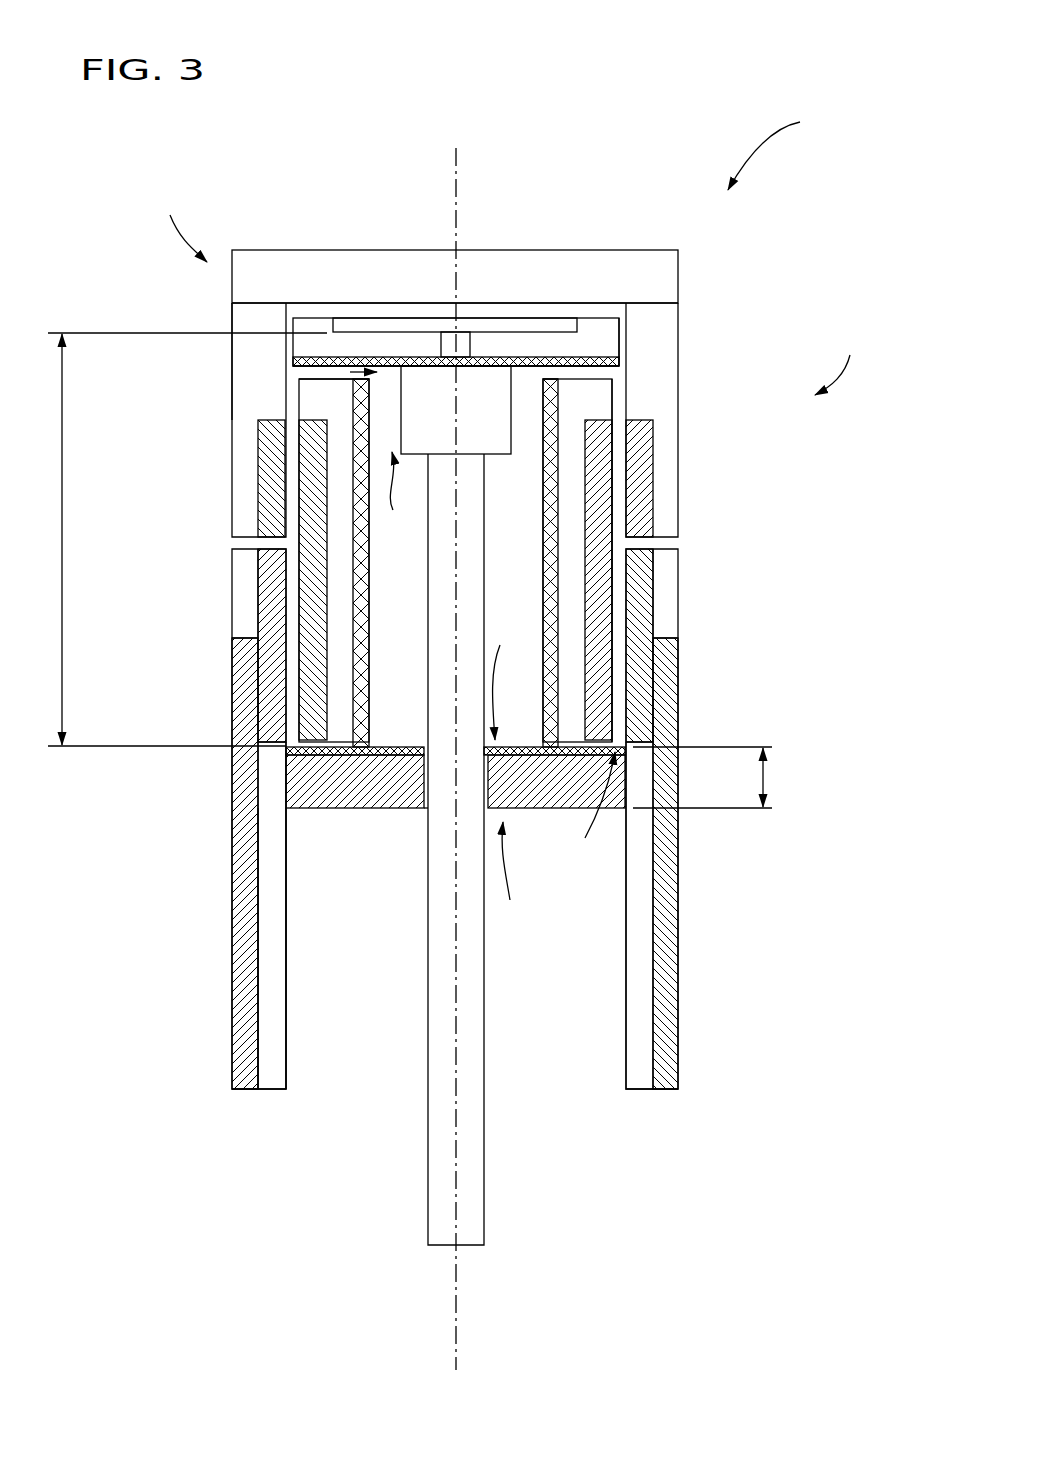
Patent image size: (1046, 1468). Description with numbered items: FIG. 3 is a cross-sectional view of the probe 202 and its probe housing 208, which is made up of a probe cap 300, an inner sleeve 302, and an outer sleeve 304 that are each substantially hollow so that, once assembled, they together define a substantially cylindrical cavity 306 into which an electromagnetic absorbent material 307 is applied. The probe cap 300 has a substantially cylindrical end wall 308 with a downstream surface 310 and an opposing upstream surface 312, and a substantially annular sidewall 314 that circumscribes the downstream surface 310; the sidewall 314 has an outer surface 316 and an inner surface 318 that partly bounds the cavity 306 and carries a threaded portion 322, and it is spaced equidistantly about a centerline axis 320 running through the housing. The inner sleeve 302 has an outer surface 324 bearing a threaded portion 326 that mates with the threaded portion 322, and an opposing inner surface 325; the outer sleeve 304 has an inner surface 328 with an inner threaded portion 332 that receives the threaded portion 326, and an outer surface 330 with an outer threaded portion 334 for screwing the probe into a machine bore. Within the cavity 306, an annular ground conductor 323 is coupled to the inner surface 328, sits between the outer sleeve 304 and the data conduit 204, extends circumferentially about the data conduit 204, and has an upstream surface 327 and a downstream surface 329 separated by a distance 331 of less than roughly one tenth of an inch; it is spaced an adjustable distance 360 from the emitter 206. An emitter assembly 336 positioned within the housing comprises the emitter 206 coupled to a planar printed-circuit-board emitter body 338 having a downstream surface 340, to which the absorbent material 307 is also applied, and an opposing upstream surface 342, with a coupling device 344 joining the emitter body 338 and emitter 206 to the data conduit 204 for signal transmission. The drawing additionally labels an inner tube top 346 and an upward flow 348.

The probe 202 is at (792, 146).
The data conduit 204 is at (485, 1228).
The emitter 206 is at (397, 318).
The probe housing 208 is at (851, 357).
The probe cap 300 is at (174, 222).
The inner sleeve 302 is at (357, 667).
The outer sleeve 304 is at (287, 980).
The cavity 306 is at (424, 609).
The electromagnetic absorbent material 307 is at (593, 358).
The end wall 308 is at (362, 250).
The downstream surface 310 is at (603, 303).
The upstream surface 312 is at (518, 250).
The sidewall 314 is at (232, 315).
The outer surface 316 is at (232, 378).
The inner surface 318 is at (290, 400).
The centerline axis 320 is at (458, 162).
The threaded portion 322 is at (258, 483).
The ground conductor 323 is at (403, 808).
The outer surface 324 is at (614, 398).
The inner surface 325 is at (543, 386).
The threaded portion 326 is at (598, 463).
The upstream surface 327 is at (516, 678).
The inner surface 328 is at (287, 905).
The downstream surface 329 is at (517, 878).
The outer surface 330 is at (232, 622).
The distance 331 is at (766, 772).
The inner threaded portion 332 is at (288, 753).
The outer threaded portion 334 is at (232, 810).
The emitter assembly 336 is at (382, 459).
The emitter body 338 is at (617, 315).
The downstream surface 340 is at (603, 370).
The upstream surface 342 is at (607, 318).
The coupling device 344 is at (497, 454).
The inner tube top 346 is at (303, 380).
The upward flow 348 is at (578, 808).
The distance 360 is at (63, 538).